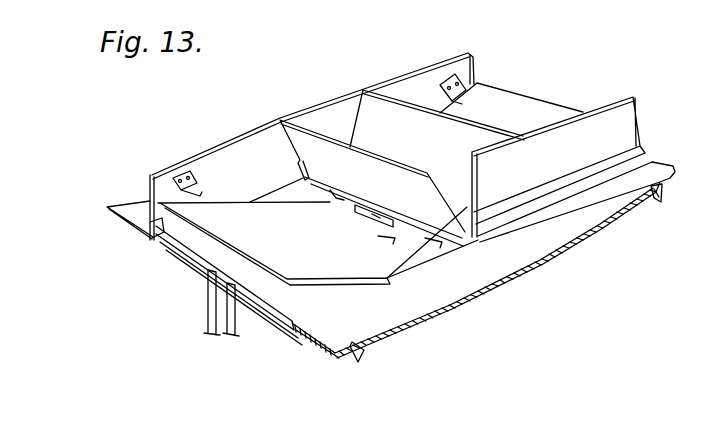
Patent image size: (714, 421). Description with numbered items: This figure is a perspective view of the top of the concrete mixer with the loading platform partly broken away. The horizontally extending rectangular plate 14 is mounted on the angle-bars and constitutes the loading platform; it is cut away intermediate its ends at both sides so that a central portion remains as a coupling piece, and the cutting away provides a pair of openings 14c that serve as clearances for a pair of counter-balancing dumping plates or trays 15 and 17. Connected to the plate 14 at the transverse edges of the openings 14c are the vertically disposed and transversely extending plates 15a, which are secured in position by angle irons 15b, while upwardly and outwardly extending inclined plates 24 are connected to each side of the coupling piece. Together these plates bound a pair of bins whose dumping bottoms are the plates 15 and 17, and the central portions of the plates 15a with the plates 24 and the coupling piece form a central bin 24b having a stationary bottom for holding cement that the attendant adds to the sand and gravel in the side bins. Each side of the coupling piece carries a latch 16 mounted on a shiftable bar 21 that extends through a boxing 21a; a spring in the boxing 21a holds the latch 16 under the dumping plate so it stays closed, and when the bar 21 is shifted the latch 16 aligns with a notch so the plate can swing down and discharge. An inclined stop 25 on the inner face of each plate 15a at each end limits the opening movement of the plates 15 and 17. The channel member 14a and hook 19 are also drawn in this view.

The plate 14 is at (130, 205).
The channel member 14a is at (345, 191).
The openings 14c is at (325, 290).
The dumping plate 15 is at (312, 231).
The vertically disposed transversely extending plates 15a is at (245, 130).
The angle irons 15b is at (147, 222).
The latch 16 is at (366, 214).
The dumping plate 17 is at (510, 100).
The hook 19 is at (373, 283).
The shiftable bar 21 is at (430, 241).
The boxing 21a is at (380, 238).
The inclined plates 24 is at (327, 131).
The bin 24b is at (437, 118).
The inclined stop 25 is at (185, 170).